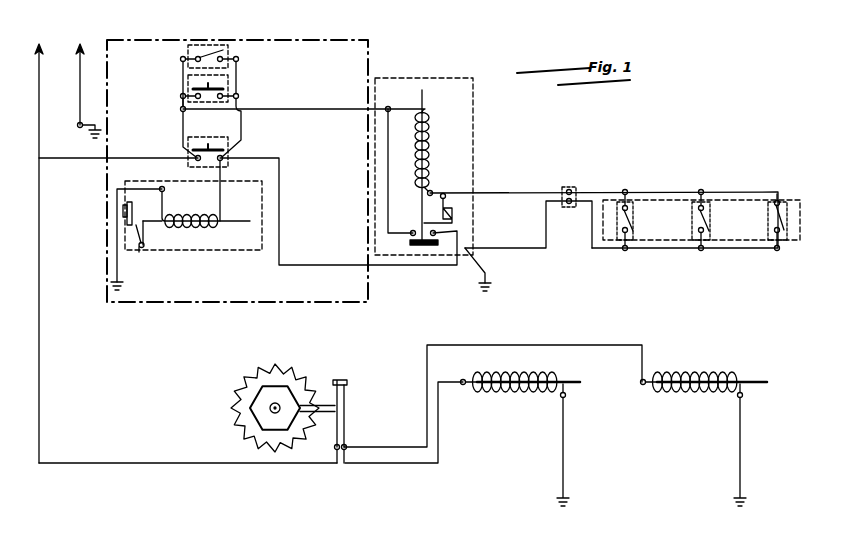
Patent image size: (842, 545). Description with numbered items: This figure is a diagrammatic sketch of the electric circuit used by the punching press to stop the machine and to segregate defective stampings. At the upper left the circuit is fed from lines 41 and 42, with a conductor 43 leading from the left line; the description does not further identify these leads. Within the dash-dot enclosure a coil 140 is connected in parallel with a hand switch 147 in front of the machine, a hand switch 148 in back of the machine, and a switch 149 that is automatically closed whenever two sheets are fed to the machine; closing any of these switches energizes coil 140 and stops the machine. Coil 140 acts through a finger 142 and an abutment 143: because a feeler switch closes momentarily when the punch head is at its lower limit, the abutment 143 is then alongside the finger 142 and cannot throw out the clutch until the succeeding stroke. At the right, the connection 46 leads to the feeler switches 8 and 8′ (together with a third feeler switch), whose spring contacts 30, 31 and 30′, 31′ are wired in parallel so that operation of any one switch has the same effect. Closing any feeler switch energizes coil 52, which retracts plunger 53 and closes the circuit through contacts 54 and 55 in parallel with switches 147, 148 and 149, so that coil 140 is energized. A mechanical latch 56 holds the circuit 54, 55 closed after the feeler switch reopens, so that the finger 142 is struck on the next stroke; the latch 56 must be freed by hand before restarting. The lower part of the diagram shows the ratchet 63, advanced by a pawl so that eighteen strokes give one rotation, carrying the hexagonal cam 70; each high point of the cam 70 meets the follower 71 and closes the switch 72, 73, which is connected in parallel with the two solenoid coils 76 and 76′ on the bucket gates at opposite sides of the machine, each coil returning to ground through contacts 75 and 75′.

The supply conductor 41 is at (40, 244).
The return conductor 42 is at (84, 81).
The conductor 43 is at (40, 160).
The connection 46 is at (572, 194).
The coil 52 is at (430, 137).
The plunger 53 is at (422, 210).
The contact 54 is at (407, 224).
The contact 55 is at (454, 233).
The mechanical latch 56 is at (452, 213).
The ratchet 63 is at (275, 370).
The hexagonal cam 70 is at (276, 393).
The follower 71 is at (312, 402).
The switch 72 is at (336, 380).
The switch 73 is at (345, 395).
The contact 75 is at (573, 384).
The contact 75′ is at (760, 385).
The solenoid coil 76 is at (520, 392).
The solenoid coil 76′ is at (692, 372).
The coil 140 is at (213, 227).
The finger 142 is at (138, 248).
The abutment 143 is at (123, 212).
The hand switch 147 is at (195, 87).
The hand switch 148 is at (195, 143).
The switch 149 is at (202, 53).
The switch 8 is at (696, 226).
The switch 8′ is at (772, 222).
The switch contact 30 is at (781, 207).
The switch contact 30′ is at (704, 206).
The switch contact 31 is at (783, 237).
The switch contact 31′ is at (708, 236).